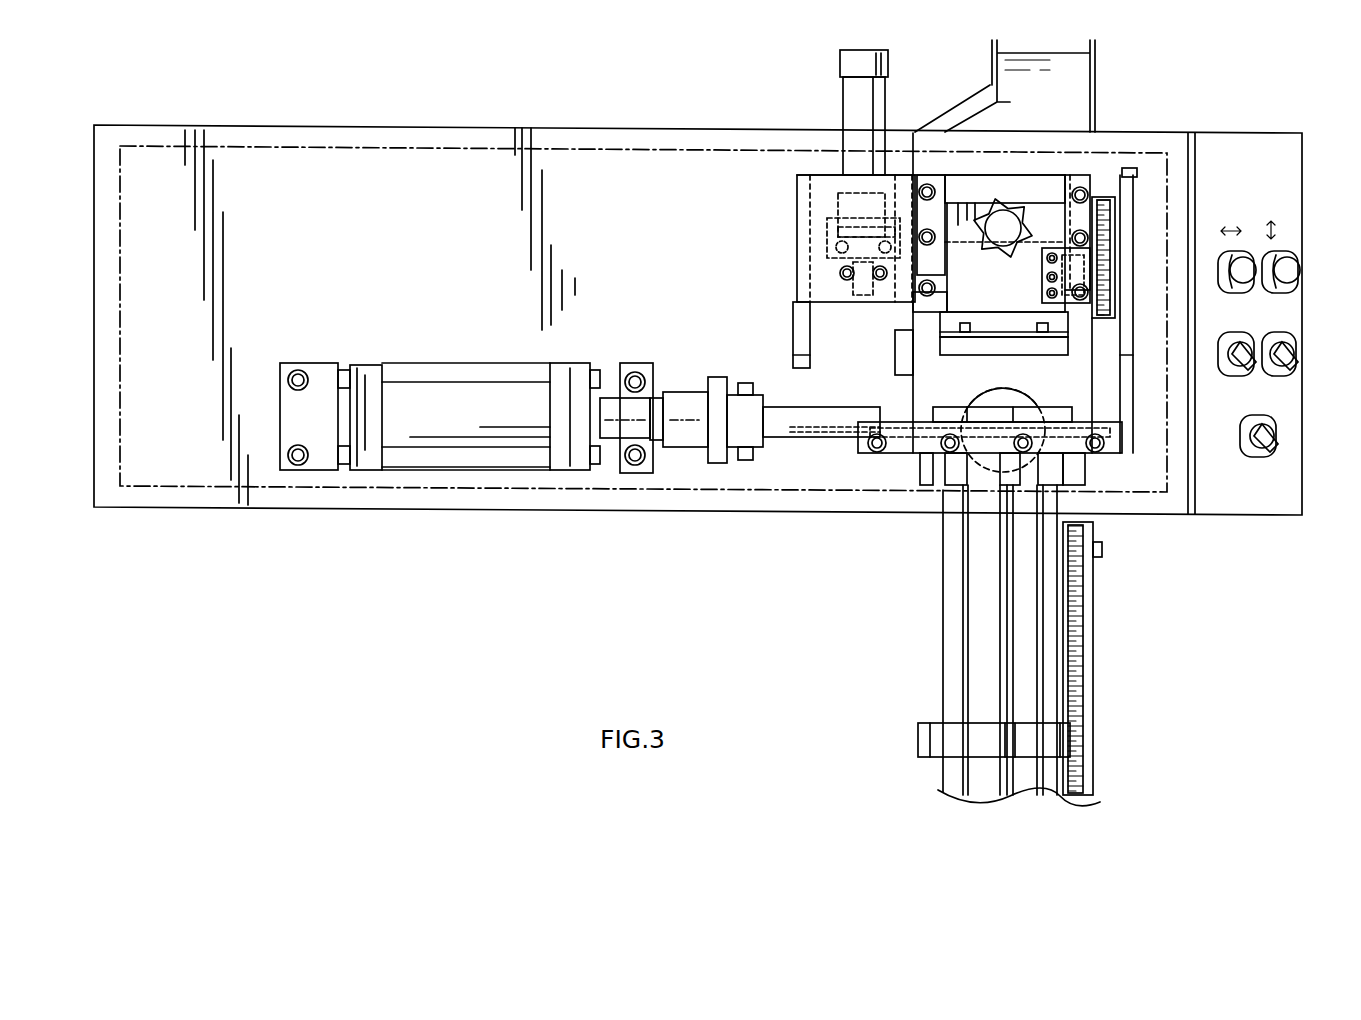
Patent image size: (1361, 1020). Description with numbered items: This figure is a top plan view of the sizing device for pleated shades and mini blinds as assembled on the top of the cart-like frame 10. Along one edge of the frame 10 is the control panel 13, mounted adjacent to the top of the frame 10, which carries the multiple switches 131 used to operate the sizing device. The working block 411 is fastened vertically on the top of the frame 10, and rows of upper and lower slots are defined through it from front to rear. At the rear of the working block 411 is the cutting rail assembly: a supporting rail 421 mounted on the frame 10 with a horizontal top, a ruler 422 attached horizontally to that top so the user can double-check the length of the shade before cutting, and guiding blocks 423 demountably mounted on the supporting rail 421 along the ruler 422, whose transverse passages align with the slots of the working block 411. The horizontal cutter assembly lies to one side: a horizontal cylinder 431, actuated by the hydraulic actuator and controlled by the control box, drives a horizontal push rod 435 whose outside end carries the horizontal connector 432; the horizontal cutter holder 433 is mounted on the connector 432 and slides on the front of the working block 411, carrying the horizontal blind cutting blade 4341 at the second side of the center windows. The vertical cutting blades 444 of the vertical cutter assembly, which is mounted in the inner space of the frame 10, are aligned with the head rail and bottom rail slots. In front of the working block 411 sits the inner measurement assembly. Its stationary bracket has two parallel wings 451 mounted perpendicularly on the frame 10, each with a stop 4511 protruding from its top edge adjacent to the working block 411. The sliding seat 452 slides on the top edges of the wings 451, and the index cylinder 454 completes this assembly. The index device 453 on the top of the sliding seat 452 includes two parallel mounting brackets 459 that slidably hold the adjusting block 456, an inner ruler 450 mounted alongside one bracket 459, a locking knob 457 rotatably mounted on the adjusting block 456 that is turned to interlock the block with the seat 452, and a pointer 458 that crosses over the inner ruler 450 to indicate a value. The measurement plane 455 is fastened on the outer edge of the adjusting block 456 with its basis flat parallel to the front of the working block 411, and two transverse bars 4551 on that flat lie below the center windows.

The frame 10 is at (650, 134).
The control panel 13 is at (1298, 310).
The switches 131 is at (1287, 370).
The working block 411 is at (1055, 433).
The supporting rail 421 is at (955, 632).
The ruler 422 is at (1082, 655).
The guiding blocks 423 is at (930, 743).
The horizontal cylinder 431 is at (437, 397).
The horizontal connector 432 is at (690, 405).
The horizontal cutter holder 433 is at (818, 430).
The horizontal blind cutting blade 4341 is at (897, 433).
The horizontal push rod 435 is at (633, 412).
The vertical cutting blades 444 is at (1150, 455).
The inner ruler 450 is at (1113, 207).
The wings 451 is at (803, 325).
The stop 4511 is at (1132, 356).
The sliding seat 452 is at (995, 185).
The index device 453 is at (1100, 158).
The index cylinder 454 is at (860, 105).
The measurement plane 455 is at (1057, 337).
The transverse bars 4551 is at (975, 348).
The adjusting block 456 is at (950, 300).
The locking knob 457 is at (1012, 235).
The pointer 458 is at (1097, 263).
The mounting brackets 459 is at (928, 184).